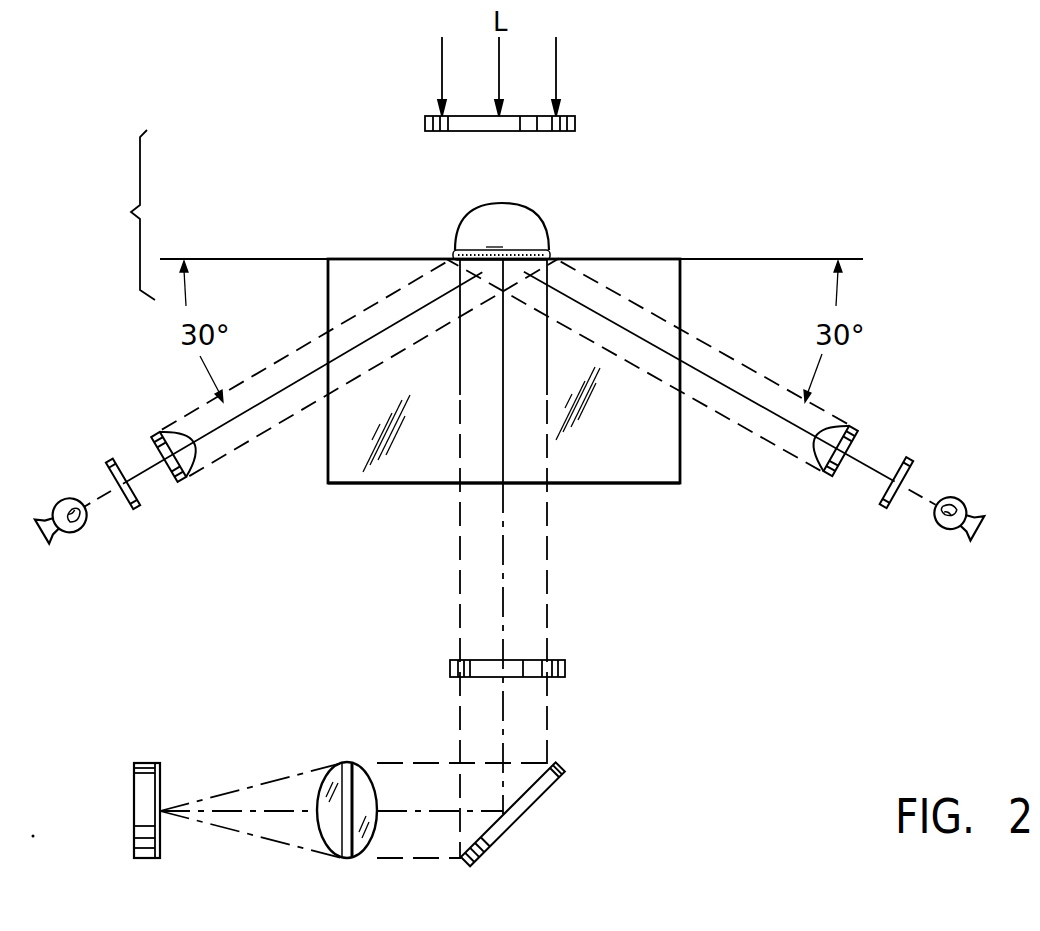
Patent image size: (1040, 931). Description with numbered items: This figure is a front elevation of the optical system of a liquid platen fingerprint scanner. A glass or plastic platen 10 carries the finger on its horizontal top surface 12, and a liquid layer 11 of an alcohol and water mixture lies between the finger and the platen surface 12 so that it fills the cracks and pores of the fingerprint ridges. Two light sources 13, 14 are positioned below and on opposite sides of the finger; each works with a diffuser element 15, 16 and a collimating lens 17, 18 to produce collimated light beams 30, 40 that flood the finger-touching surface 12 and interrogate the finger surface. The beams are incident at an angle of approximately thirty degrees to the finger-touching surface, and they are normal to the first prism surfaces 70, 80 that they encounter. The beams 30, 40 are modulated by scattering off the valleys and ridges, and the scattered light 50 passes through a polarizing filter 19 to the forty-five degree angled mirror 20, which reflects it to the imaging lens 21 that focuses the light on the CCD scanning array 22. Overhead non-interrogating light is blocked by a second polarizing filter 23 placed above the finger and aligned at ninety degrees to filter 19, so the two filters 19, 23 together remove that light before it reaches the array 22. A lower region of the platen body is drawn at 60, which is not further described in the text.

The platen 10 is at (642, 470).
The liquid layer 11 is at (453, 250).
The platen horizontal top surface 12 is at (372, 258).
The light source 13 is at (72, 535).
The light source 14 is at (935, 525).
The diffuser element 15 is at (108, 468).
The diffuser element 16 is at (897, 458).
The collimating lens 17 is at (160, 443).
The collimating lens 18 is at (840, 428).
The polarizing filter 19 is at (560, 678).
The mirror 20 is at (518, 824).
The imaging lens 21 is at (325, 848).
The CCD scanning array 22 is at (134, 812).
The polarizing filter 23 is at (452, 133).
The collimated light beam 30 is at (266, 424).
The collimated light beam 40 is at (744, 368).
The scattered light 50 is at (550, 557).
The bottom wall of sample cell 60 is at (405, 485).
The first prism surface 70 is at (356, 292).
The first prism surface 80 is at (636, 282).